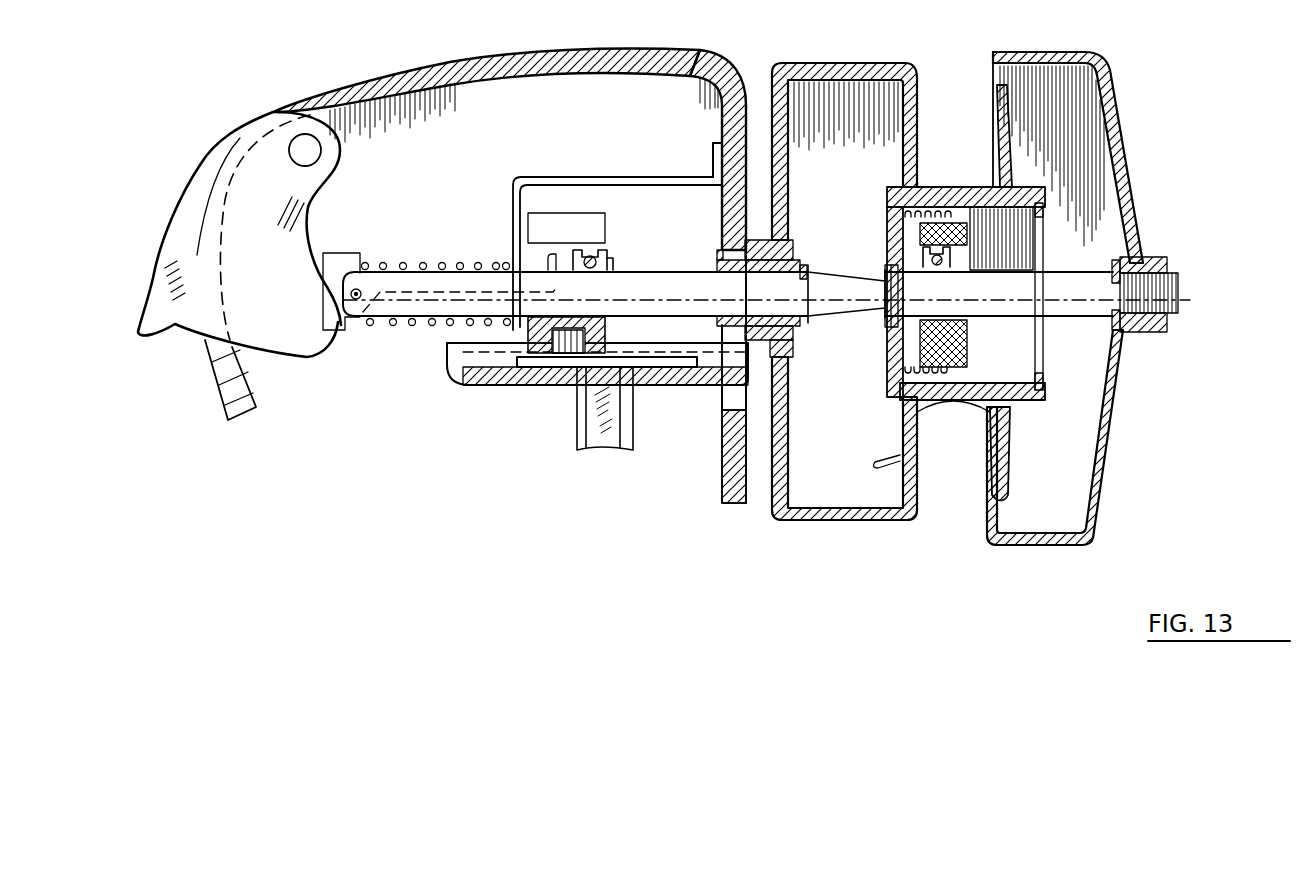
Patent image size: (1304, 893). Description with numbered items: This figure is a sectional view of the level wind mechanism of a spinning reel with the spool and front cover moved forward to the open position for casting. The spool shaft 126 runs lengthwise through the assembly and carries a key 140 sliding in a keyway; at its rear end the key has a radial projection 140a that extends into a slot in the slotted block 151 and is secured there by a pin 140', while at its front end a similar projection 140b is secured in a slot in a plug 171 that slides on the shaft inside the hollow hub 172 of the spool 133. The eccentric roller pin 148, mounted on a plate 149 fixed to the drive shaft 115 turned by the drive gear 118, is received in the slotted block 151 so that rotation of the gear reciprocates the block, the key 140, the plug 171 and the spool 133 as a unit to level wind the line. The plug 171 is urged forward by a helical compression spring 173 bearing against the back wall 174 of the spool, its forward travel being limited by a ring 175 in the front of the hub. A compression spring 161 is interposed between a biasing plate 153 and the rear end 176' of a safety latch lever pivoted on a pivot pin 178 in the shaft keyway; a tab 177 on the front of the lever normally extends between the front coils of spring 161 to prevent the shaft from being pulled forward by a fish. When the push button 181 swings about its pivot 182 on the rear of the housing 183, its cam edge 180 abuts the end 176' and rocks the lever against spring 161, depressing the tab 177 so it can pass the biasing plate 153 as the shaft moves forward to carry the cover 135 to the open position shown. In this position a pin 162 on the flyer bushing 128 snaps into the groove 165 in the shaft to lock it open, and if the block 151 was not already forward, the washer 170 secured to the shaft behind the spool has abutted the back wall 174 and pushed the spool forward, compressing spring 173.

The drive shaft 115 is at (593, 428).
The drive gear 118 is at (460, 383).
The spool shaft 126 is at (700, 262).
The flyer bushing 128 is at (800, 350).
The spool 133 is at (1000, 128).
The cover 135 is at (1123, 177).
The key 140 is at (766, 279).
The pin 140' is at (604, 192).
The radial projection 140a is at (606, 257).
The projection 140b is at (952, 265).
The eccentric roller pin 148 is at (568, 343).
The plate 149 is at (520, 360).
The slotted block 151 is at (602, 333).
The biasing plate 153 is at (527, 177).
The compression spring 161 is at (405, 262).
The pin 162 is at (803, 270).
The groove 165 is at (790, 289).
The washer 170 is at (895, 312).
The plug 171 is at (968, 338).
The hollow hub 172 is at (1028, 192).
The helical compression spring 173 is at (937, 383).
The back wall 174 is at (889, 203).
The ring 175 is at (1040, 380).
The end of safety latch lever 176' is at (337, 258).
The tab 177 is at (560, 258).
The pivot pin 178 is at (351, 298).
The cam edge 180 is at (318, 270).
The push button 181 is at (273, 218).
The pivot 182 is at (315, 149).
The housing 183 is at (532, 63).